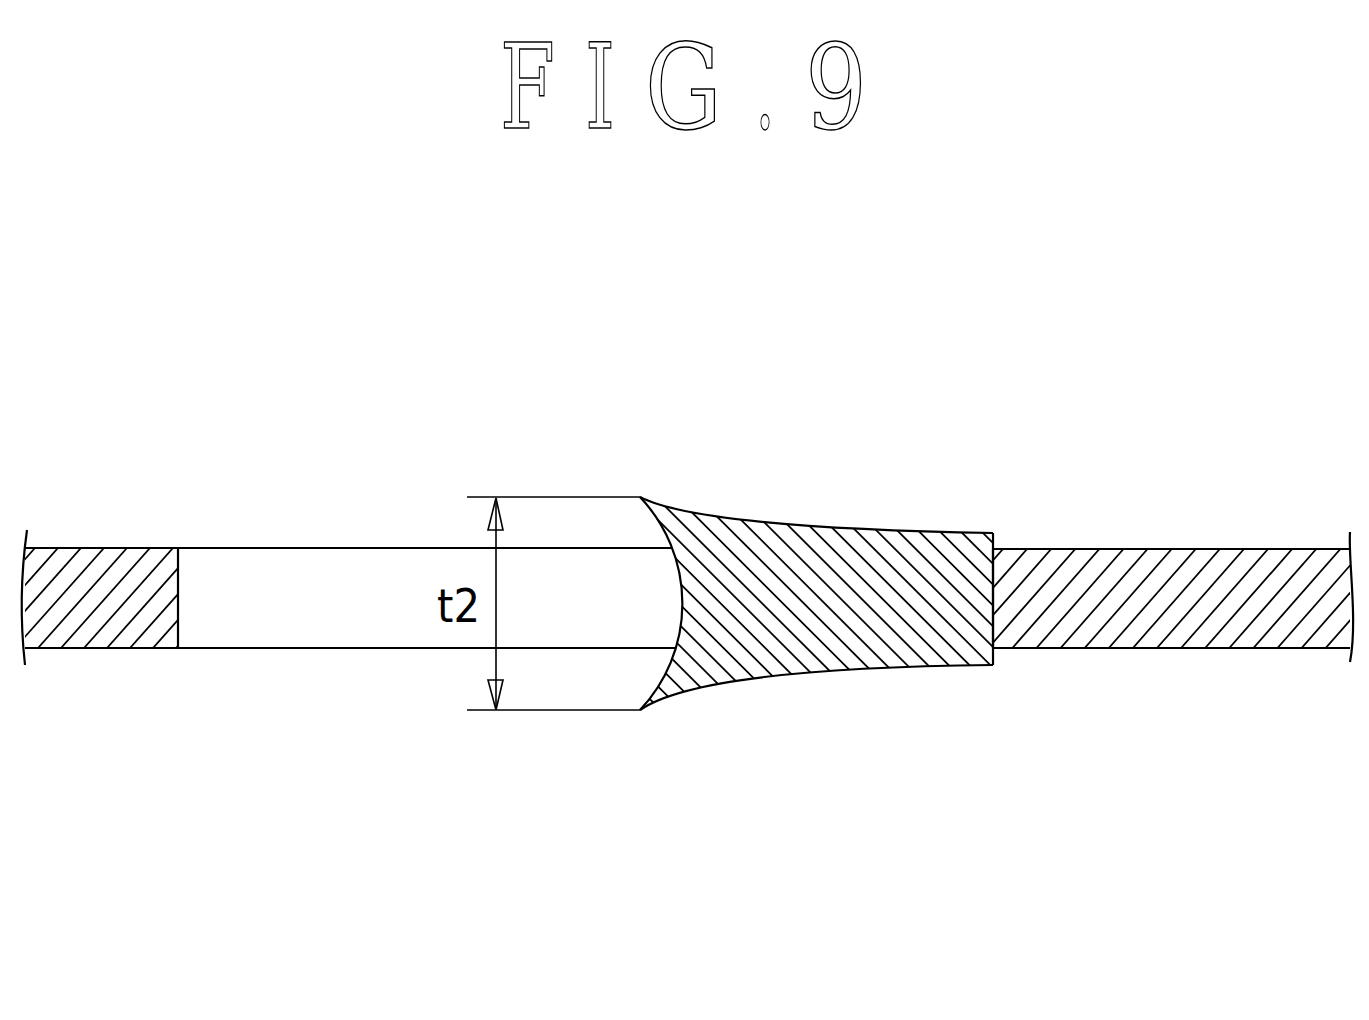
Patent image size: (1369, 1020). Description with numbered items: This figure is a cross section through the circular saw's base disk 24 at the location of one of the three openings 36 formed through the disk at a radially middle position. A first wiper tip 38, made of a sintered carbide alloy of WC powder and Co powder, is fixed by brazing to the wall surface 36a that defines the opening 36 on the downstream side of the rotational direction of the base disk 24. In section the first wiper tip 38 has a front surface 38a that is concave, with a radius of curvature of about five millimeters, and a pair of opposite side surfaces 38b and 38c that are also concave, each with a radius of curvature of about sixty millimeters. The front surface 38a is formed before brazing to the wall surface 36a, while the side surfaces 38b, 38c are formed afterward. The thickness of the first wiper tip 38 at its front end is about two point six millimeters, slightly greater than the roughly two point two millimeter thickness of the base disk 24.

The base disk 24 is at (1176, 580).
The opening 36 is at (247, 622).
The wall surface 36a is at (990, 602).
The first wiper tip 38 is at (804, 591).
The front surface 38a is at (677, 592).
The side surface 38b is at (732, 519).
The side surface 38c is at (753, 677).